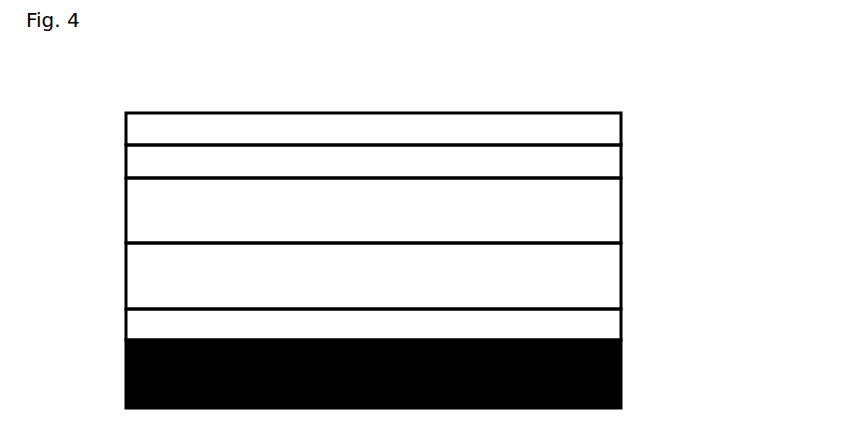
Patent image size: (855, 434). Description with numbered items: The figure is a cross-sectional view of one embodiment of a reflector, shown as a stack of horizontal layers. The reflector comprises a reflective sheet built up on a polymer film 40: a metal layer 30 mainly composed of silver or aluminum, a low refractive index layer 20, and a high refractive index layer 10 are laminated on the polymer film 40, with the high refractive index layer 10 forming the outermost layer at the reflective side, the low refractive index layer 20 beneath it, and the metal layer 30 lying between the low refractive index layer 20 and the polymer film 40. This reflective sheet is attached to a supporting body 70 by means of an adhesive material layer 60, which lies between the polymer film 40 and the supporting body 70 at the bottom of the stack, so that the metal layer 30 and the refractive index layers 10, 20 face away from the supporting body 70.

The high refractive index layer 10 is at (622, 112).
The low refractive index layer 20 is at (622, 160).
The metal layer 30 is at (622, 208).
The polymer film 40 is at (622, 275).
The adhesive material layer 60 is at (622, 325).
The supporting body 70 is at (622, 373).